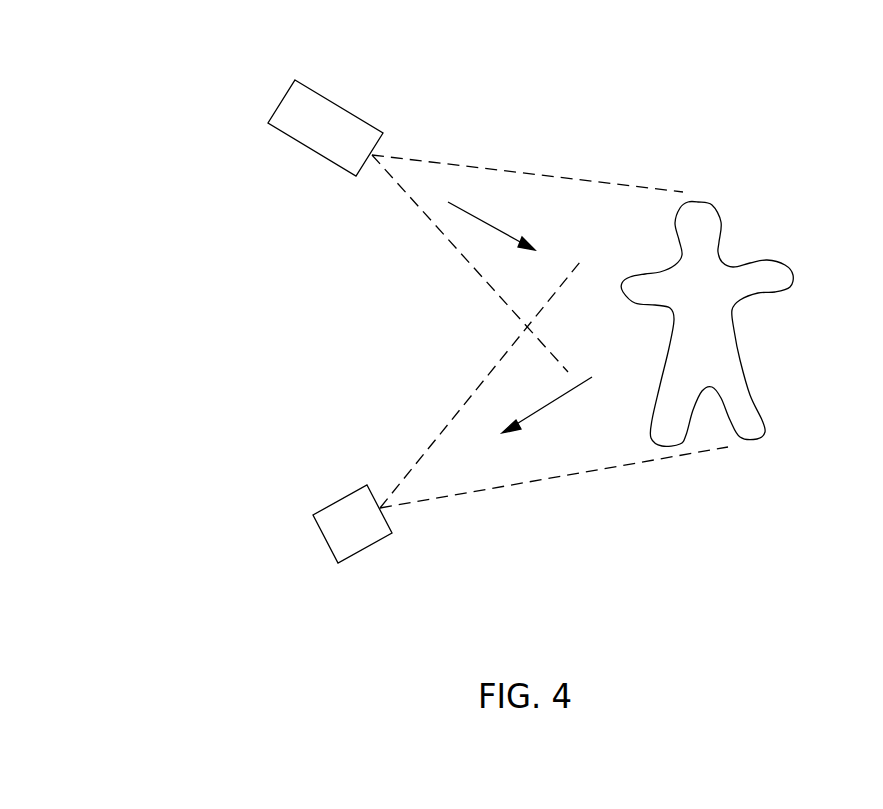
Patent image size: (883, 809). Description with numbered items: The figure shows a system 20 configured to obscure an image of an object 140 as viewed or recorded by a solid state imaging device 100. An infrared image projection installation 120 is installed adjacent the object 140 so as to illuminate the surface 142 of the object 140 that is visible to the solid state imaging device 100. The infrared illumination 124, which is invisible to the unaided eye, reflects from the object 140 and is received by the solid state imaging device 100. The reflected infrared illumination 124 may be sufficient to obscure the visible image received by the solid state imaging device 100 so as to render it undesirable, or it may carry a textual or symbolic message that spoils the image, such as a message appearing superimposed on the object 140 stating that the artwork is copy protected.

The system 20 is at (150, 336).
The solid state imaging device 100 is at (367, 548).
The infrared image projection installation 120 is at (315, 88).
The infrared illumination 124 is at (487, 222).
The object 140 is at (773, 263).
The surface 142 is at (728, 368).